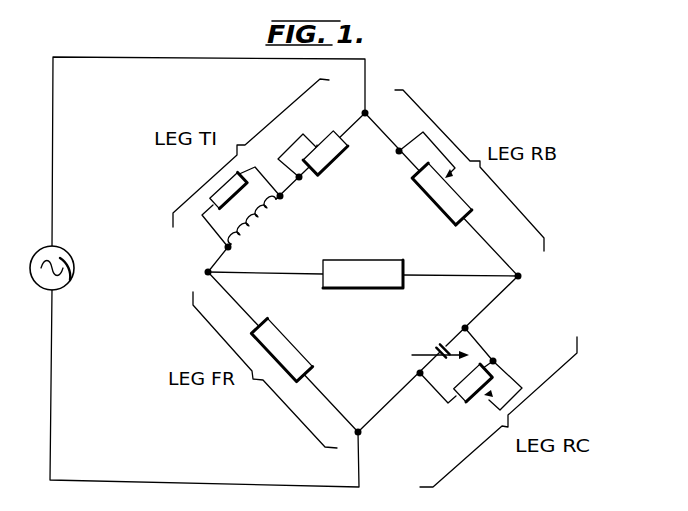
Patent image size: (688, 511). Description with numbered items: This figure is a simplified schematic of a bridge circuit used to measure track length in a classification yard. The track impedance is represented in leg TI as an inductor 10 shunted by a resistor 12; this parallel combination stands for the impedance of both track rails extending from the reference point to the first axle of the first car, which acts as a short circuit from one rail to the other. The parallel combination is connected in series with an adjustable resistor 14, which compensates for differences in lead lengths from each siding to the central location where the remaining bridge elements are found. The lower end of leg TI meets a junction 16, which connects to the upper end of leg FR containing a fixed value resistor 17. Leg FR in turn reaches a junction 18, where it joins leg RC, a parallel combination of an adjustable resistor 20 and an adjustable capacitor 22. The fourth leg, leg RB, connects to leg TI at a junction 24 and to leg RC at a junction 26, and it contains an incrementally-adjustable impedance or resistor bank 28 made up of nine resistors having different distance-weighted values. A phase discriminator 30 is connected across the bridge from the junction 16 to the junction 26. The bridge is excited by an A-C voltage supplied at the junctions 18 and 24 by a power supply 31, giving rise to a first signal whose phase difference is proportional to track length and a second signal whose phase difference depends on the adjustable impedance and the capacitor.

The inductor 10 is at (270, 208).
The resistor 12 is at (207, 202).
The adjustable resistor 14 is at (336, 166).
The junction 16 is at (205, 272).
The fixed value resistor 17 is at (302, 353).
The junction 18 is at (360, 434).
The adjustable resistor 20 is at (468, 403).
The adjustable capacitor 22 is at (438, 343).
The junction 24 is at (367, 111).
The junction 26 is at (521, 277).
The resistor bank 28 is at (427, 188).
The phase discriminator 30 is at (347, 291).
The power supply 31 is at (55, 291).